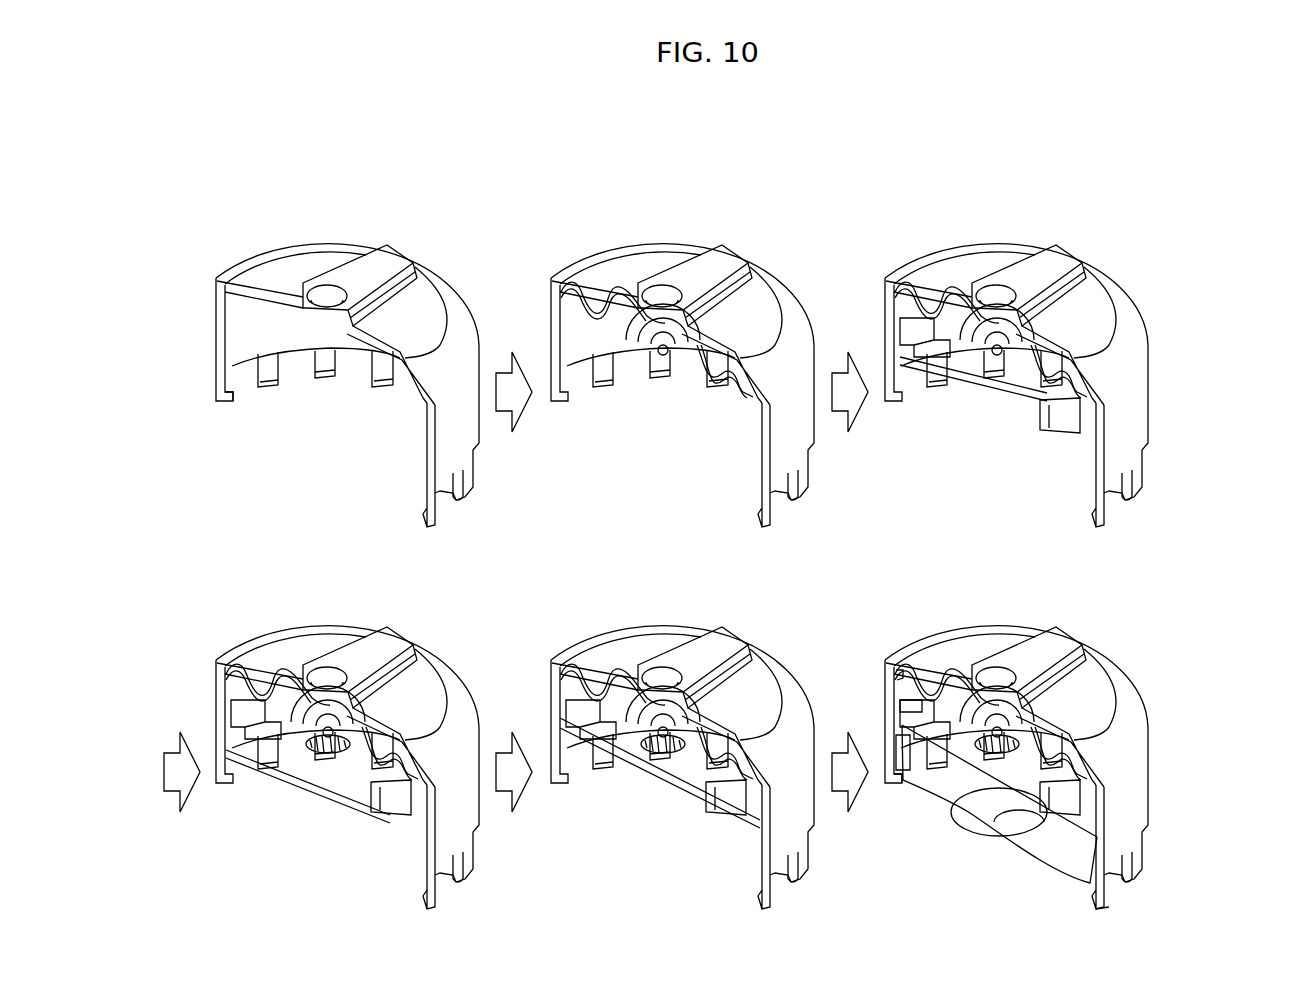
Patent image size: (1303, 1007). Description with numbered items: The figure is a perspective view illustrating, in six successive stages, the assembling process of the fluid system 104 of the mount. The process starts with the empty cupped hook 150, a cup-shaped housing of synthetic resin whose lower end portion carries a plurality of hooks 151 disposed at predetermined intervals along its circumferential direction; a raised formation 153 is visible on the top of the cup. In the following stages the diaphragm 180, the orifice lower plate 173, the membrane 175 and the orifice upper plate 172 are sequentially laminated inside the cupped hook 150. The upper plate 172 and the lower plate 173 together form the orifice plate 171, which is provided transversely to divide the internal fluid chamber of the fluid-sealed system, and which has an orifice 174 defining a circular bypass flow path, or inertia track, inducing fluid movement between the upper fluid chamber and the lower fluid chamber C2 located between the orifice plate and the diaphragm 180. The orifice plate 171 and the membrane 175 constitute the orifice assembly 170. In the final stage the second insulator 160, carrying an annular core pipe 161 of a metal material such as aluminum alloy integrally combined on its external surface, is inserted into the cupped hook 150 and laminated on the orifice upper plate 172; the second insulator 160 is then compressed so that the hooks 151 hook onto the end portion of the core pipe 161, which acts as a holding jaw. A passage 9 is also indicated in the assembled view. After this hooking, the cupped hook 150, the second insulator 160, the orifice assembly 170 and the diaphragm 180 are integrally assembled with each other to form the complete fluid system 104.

The cupped hook 150 is at (790, 316).
The hooks 151 is at (230, 402).
The bar 153 is at (387, 265).
The diaphragm 180 is at (605, 308).
The lower plate 173 is at (967, 357).
The upper plate 172 is at (620, 760).
The orifice plate 171 is at (1201, 798).
The membrane 175 is at (323, 763).
The orifice 174 is at (910, 705).
The core pipe 161 is at (900, 750).
The second insulator 160 is at (940, 795).
The orifice assembly 170 is at (975, 770).
The hole 9 is at (1018, 825).
The fluid system 104 is at (933, 632).
The lower fluid chamber C2 is at (905, 665).